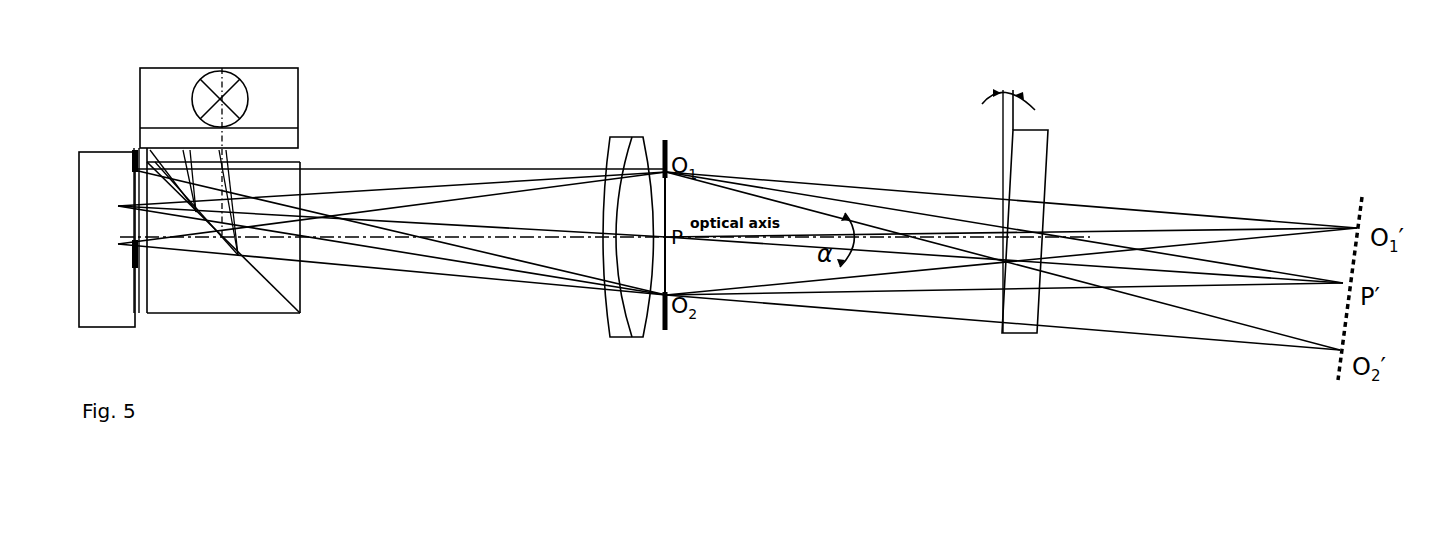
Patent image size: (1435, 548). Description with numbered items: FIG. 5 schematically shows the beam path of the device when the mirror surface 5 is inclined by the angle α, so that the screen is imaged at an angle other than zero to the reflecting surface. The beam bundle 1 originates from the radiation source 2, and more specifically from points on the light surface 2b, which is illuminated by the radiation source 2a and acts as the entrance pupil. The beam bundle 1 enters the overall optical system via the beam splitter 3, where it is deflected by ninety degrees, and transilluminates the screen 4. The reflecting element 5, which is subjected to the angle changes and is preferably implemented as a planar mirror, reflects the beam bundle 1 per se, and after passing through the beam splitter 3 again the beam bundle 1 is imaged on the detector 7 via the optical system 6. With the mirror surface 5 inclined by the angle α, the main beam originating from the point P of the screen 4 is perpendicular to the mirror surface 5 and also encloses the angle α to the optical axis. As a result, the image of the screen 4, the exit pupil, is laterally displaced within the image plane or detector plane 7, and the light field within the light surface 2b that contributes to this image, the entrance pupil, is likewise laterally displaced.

The beam bundle 1 is at (137, 172).
The radiation source 2 is at (163, 92).
The radiation source 2a is at (225, 77).
The light surface 2b is at (287, 135).
The beam splitter 3 is at (250, 305).
The screen 4 is at (667, 140).
The reflecting element 5 is at (1037, 147).
The optical system 6 is at (618, 157).
The detector 7 is at (117, 152).